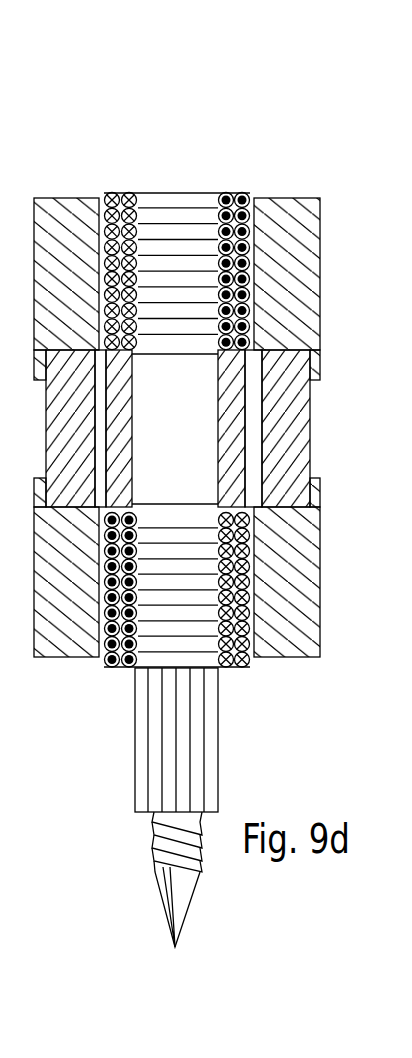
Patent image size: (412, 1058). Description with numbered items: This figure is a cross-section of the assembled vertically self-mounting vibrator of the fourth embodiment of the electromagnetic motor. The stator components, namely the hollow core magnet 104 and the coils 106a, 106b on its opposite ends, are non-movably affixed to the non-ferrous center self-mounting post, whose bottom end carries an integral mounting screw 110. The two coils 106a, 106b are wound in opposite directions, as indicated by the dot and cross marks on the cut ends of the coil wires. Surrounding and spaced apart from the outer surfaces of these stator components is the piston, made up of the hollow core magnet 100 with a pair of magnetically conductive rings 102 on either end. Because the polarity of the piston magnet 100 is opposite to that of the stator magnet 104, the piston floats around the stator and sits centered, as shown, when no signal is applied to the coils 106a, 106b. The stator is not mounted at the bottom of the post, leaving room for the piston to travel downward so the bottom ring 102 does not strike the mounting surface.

The hollow core magnet 100 is at (302, 442).
The magnetically conductive rings 102 is at (322, 260).
The hollow core magnet 104 is at (233, 463).
The coil 106a is at (243, 196).
The coil 106b is at (249, 668).
The mounting screw 110 is at (158, 870).